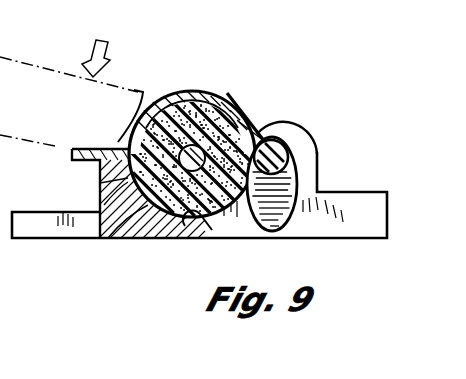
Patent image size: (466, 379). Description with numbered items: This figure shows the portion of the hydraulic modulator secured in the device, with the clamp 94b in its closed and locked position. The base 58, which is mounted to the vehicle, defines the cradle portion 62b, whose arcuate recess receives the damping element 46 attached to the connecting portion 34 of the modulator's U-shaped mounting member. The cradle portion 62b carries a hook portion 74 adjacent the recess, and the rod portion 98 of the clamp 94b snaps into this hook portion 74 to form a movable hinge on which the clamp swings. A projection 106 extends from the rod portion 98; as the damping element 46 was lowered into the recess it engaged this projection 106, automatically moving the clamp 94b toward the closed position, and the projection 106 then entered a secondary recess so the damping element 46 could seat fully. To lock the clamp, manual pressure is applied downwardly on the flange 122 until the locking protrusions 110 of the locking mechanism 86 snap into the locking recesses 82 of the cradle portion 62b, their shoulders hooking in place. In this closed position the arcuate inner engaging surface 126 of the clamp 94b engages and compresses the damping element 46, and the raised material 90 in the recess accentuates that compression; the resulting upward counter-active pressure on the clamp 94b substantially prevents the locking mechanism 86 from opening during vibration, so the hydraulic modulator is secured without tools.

The damping element 46 is at (161, 115).
The clamp 94b is at (192, 145).
The arcuate inner engaging surface 126 is at (222, 108).
The connecting portion 34 is at (236, 122).
The rod portion 98 is at (274, 141).
The projection 106 is at (265, 190).
The hook portion 74 is at (300, 153).
The flange 122 is at (72, 149).
The locking mechanism 86 is at (94, 185).
The base 58 is at (50, 200).
The locking recess 82 is at (110, 198).
The locking protrusion 110 is at (112, 212).
The cradle portion 62b is at (140, 212).
The raised material 90 is at (194, 214).